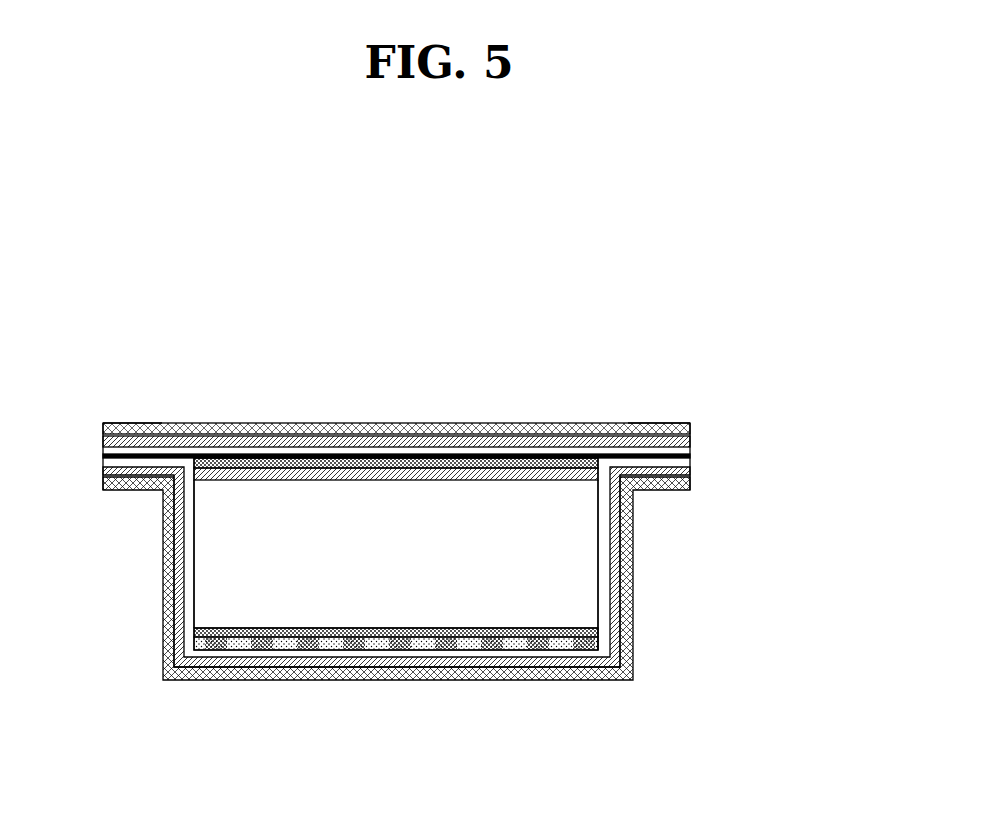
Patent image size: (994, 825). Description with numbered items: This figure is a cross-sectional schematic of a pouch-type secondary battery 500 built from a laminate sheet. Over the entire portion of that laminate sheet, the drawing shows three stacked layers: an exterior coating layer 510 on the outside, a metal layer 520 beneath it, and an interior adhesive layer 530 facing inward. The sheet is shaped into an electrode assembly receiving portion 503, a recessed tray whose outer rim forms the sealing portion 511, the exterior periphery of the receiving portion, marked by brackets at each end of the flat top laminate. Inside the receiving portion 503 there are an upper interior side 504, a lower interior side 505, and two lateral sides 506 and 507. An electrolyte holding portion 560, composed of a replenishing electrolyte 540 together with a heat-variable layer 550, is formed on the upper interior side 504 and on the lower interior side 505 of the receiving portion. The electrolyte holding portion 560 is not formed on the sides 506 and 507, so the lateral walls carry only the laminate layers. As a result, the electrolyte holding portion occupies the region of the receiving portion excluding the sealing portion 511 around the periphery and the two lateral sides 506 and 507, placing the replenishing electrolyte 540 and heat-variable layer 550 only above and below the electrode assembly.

The pouch-type secondary battery 500 is at (104, 345).
The electrode assembly receiving portion 503 is at (402, 612).
The upper interior side 504 is at (215, 491).
The lower interior side 505 is at (282, 614).
The side of receiving portion 506 is at (210, 603).
The side of receiving portion 507 is at (577, 603).
The exterior coating layer 510 is at (690, 423).
The sealing portion 511 is at (103, 416).
The metal layer 520 is at (690, 440).
The interior adhesive layer 530 is at (690, 456).
The replenishing electrolyte 540 is at (598, 517).
The heat-variable layer 550 is at (587, 563).
The electrolyte holding portion 560 is at (795, 515).